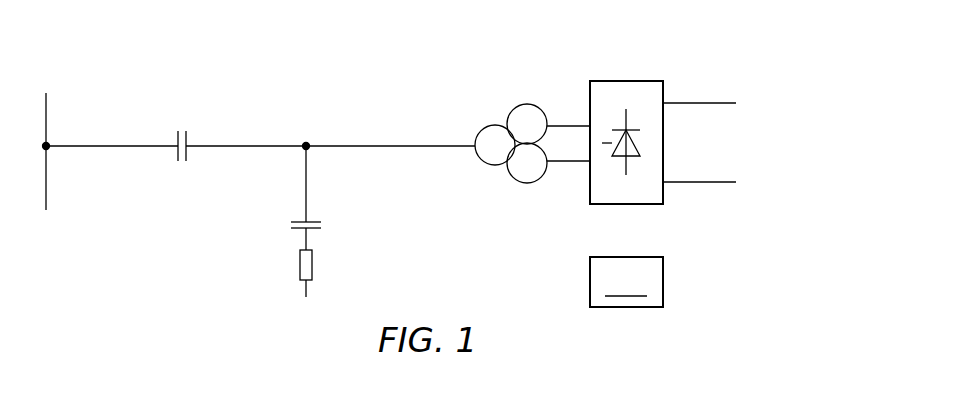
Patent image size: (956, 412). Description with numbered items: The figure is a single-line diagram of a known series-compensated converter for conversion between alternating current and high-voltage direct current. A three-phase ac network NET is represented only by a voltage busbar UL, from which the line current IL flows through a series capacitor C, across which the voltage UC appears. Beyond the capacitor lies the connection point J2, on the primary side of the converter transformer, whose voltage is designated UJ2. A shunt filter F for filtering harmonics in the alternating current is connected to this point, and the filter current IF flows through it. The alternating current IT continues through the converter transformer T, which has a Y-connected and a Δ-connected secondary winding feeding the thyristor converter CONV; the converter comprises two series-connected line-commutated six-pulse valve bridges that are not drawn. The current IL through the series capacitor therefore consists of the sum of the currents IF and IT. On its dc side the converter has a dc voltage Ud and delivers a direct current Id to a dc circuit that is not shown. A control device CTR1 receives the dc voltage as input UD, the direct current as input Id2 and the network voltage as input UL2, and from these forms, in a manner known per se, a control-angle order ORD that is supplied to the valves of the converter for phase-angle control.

The three-phase ac network NET is at (46, 101).
The voltage busbar UL is at (44, 237).
The current through the series capacitor IL is at (107, 137).
The series capacitor C is at (189, 152).
The voltage across the series capacitor UC is at (186, 114).
The connection point J2 is at (306, 144).
The voltage at the connection point UJ2 is at (271, 126).
The alternating current to the converter IT is at (440, 137).
The shunt filter F is at (306, 240).
The filter current IF is at (297, 200).
The converter transformer T is at (503, 170).
The thyristor converter CONV is at (604, 81).
The direct current Id is at (720, 93).
The dc voltage Ud is at (682, 140).
The control device CTR1 is at (607, 257).
The control-angle order ORD is at (626, 204).
The dc voltage input UD is at (663, 267).
The direct current input Id2 is at (663, 297).
The network voltage input UL2 is at (626, 307).